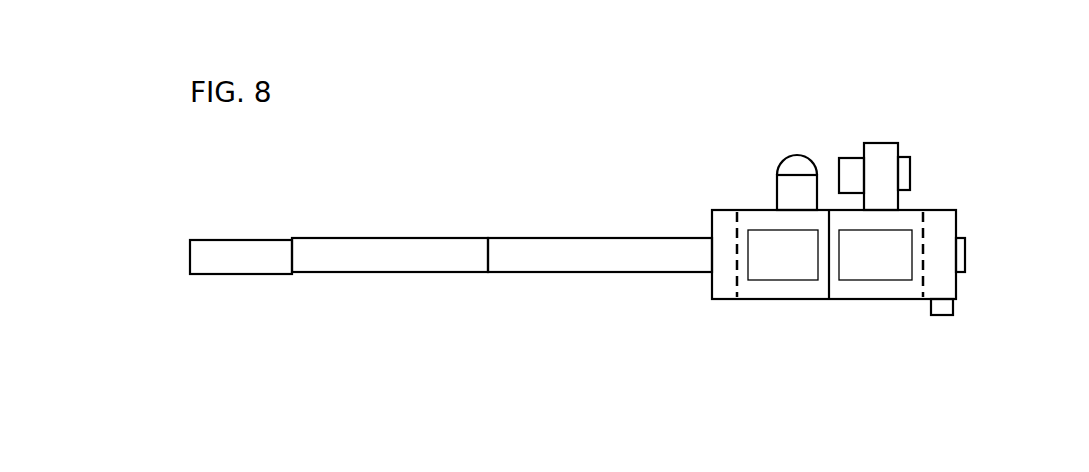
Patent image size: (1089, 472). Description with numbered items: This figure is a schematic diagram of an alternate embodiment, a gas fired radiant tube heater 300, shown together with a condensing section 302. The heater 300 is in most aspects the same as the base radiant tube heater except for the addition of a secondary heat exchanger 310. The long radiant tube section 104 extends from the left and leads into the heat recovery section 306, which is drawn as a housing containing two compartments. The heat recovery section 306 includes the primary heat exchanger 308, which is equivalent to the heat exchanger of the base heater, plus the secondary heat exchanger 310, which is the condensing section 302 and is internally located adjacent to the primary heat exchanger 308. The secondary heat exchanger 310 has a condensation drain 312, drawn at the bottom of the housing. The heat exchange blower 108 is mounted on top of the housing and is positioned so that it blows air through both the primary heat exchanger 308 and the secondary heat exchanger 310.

The radiant tube section 104 is at (339, 338).
The heat exchange blower 108 is at (877, 153).
The gas fired radiant tube heater 300 is at (527, 149).
The condensing section 302 is at (1000, 188).
The heat recovery section 306 is at (784, 360).
The primary heat exchanger 308 is at (752, 220).
The secondary heat exchanger 310 is at (907, 219).
The condensation drain 312 is at (940, 310).